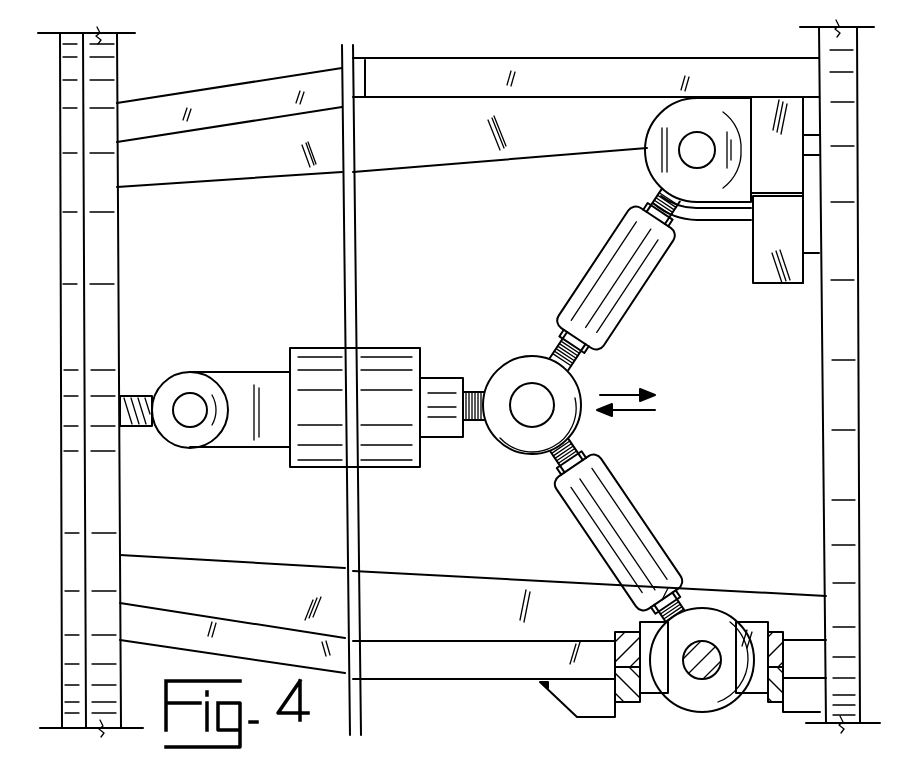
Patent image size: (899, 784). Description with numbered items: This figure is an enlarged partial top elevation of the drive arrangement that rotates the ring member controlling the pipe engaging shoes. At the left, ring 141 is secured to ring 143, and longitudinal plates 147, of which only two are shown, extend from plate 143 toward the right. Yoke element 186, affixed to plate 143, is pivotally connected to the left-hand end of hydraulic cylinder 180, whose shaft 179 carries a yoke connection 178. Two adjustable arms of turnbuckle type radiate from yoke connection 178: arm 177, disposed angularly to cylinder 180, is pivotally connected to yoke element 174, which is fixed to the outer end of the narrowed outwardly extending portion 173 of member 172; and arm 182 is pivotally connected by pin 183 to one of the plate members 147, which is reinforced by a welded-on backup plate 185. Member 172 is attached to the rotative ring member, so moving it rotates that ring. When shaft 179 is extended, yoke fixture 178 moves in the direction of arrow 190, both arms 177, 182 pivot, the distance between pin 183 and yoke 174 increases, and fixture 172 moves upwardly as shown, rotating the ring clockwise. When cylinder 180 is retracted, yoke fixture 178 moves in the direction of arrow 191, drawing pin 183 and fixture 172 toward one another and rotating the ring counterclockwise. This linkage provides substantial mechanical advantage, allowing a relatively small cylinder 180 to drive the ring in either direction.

The ring 141 is at (84, 237).
The ring 143 is at (119, 268).
The longitudinal plates 147 is at (225, 184).
The member 172 is at (753, 276).
The narrowed outwardly extending portion 173 is at (772, 108).
The yoke element 174 is at (718, 222).
The arm 177 is at (600, 252).
The yoke connection 178 is at (511, 448).
The shaft 179 is at (449, 378).
The hydraulic cylinder 180 is at (315, 348).
The arm 182 is at (640, 512).
The pin 183 is at (705, 642).
The backup plate 185 is at (557, 701).
The yoke element 186 is at (173, 378).
The arrow 190 is at (620, 394).
The arrow 191 is at (632, 409).